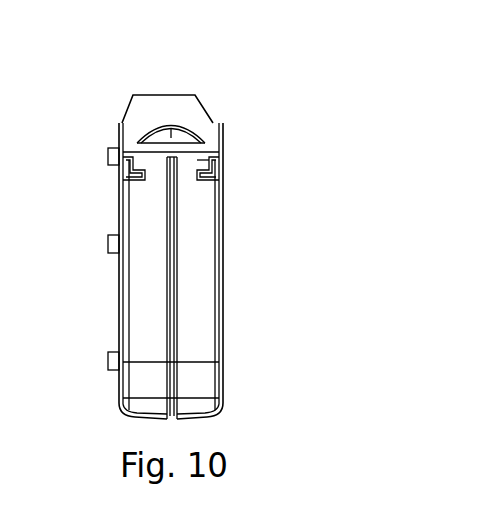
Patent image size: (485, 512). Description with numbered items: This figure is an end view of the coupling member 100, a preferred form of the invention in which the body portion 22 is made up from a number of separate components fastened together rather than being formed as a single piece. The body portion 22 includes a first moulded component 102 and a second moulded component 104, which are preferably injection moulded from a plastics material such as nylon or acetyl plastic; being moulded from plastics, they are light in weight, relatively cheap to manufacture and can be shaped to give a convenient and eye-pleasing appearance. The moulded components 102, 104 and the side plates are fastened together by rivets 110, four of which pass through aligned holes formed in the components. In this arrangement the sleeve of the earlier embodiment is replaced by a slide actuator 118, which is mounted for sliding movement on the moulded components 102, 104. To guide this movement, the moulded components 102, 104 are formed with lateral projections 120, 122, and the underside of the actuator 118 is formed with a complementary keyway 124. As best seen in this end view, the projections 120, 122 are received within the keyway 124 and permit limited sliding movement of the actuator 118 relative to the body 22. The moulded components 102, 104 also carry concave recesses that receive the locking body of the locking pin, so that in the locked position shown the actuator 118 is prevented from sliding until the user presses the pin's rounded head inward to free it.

The coupling member 100 is at (205, 58).
The body portion 22 is at (280, 274).
The first moulded component 102 is at (227, 347).
The second moulded component 104 is at (115, 323).
The rivets 110 is at (105, 157).
The slide actuator 118 is at (177, 97).
The lateral projection 120 is at (203, 160).
The lateral projection 122 is at (143, 162).
The keyway 124 is at (200, 152).